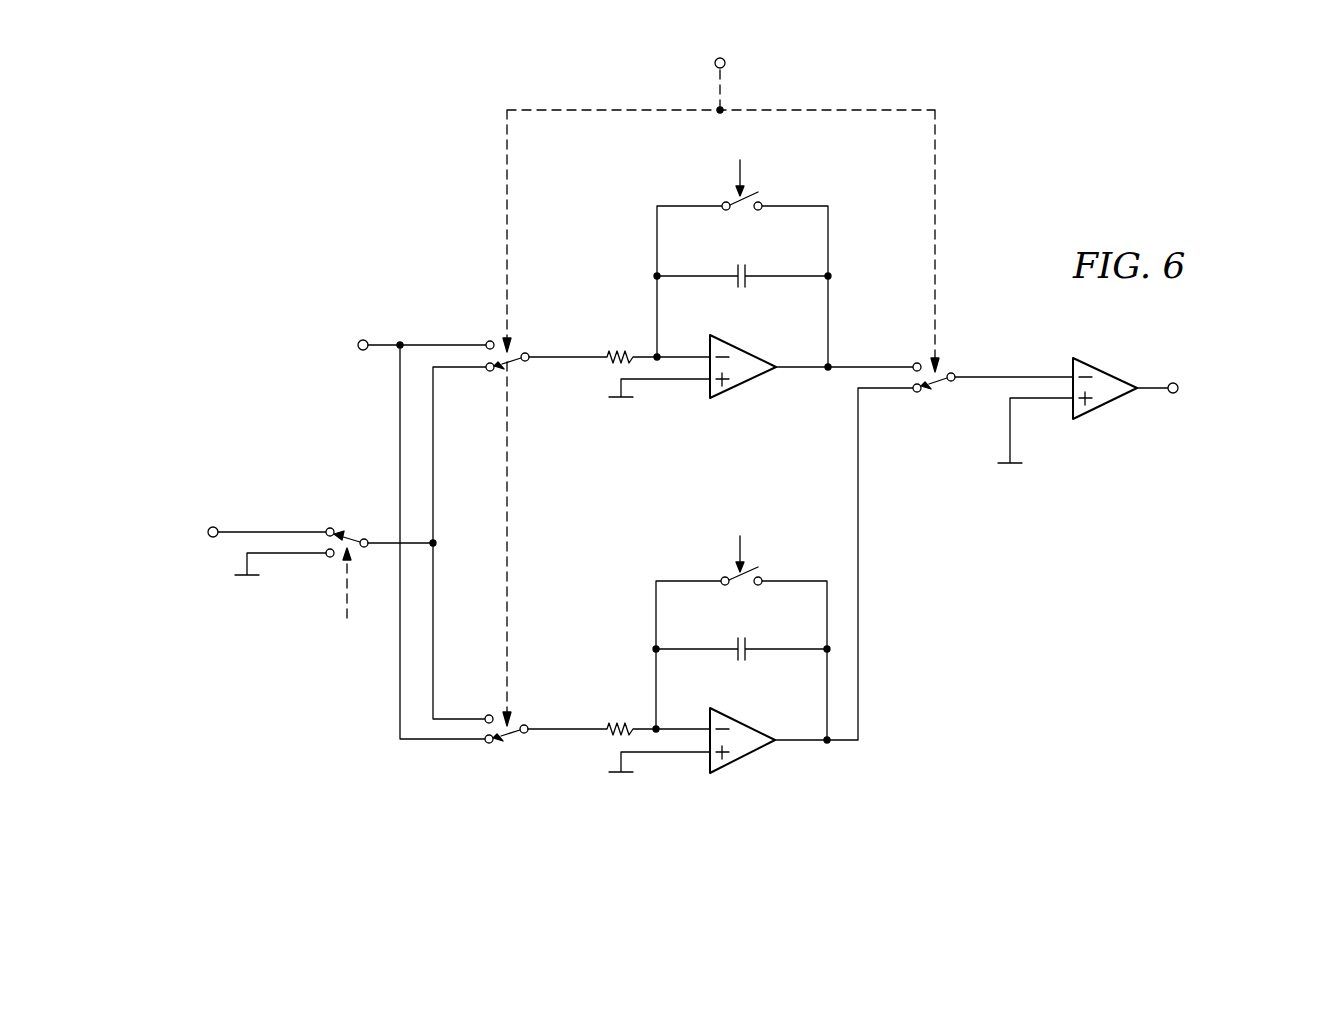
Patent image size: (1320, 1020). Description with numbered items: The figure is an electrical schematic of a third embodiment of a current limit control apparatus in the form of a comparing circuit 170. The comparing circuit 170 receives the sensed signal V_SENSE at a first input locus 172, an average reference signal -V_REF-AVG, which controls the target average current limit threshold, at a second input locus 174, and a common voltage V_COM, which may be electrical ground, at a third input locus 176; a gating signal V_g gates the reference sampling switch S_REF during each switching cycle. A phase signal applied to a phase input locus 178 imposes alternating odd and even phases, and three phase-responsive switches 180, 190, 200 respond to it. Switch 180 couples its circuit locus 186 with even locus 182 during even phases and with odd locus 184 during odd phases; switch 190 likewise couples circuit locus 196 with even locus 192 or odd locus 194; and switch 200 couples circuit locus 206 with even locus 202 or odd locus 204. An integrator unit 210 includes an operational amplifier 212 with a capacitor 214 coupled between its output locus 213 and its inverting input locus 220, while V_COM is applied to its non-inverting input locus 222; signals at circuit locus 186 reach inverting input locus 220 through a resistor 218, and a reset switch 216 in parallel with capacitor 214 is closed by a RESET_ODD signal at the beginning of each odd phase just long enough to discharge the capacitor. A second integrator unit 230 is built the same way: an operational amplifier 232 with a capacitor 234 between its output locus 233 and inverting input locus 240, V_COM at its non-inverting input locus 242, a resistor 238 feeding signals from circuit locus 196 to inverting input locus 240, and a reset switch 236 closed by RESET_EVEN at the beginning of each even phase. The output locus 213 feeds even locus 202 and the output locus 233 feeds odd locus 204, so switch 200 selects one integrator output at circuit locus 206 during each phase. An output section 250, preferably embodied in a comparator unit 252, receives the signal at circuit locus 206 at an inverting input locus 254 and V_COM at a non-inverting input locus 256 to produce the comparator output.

The comparing circuit 170 is at (427, 125).
The first input locus 172 is at (362, 352).
The second input locus 174 is at (212, 526).
The third input locus 176 is at (328, 560).
The phase input locus 178 is at (726, 66).
The phase-responsive switch 180 is at (524, 362).
The even locus 182 is at (488, 340).
The odd locus 184 is at (488, 372).
The circuit locus 186 is at (528, 352).
The phase-responsive switch 190 is at (524, 735).
The even locus 192 is at (488, 714).
The odd locus 194 is at (488, 746).
The circuit locus 196 is at (527, 724).
The phase-responsive switch 200 is at (952, 382).
The even locus 202 is at (915, 362).
The odd locus 204 is at (915, 393).
The circuit locus 206 is at (955, 372).
The integrator unit 210 is at (780, 440).
The operational amplifier 212 is at (745, 387).
The output locus 213 is at (808, 369).
The capacitor 214 is at (746, 290).
The reset switch 216 is at (742, 210).
The resistor 218 is at (618, 352).
The inverting input locus 220 is at (702, 352).
The non-inverting input locus 222 is at (700, 383).
The integrator unit 230 is at (780, 814).
The operational amplifier 232 is at (745, 760).
The output locus 233 is at (808, 742).
The capacitor 234 is at (746, 662).
The reset switch 236 is at (742, 585).
The resistor 238 is at (618, 724).
The inverting input locus 240 is at (702, 724).
The non-inverting input locus 242 is at (700, 756).
The output section 250 is at (1120, 422).
The comparator unit 252 is at (1106, 370).
The inverting input locus 254 is at (1062, 375).
The non-inverting input locus 256 is at (1068, 403).